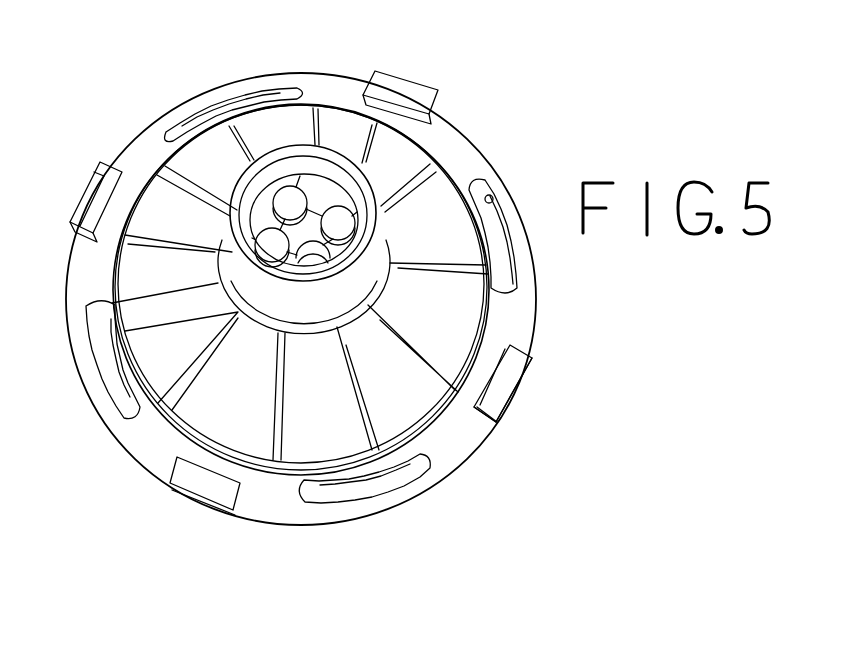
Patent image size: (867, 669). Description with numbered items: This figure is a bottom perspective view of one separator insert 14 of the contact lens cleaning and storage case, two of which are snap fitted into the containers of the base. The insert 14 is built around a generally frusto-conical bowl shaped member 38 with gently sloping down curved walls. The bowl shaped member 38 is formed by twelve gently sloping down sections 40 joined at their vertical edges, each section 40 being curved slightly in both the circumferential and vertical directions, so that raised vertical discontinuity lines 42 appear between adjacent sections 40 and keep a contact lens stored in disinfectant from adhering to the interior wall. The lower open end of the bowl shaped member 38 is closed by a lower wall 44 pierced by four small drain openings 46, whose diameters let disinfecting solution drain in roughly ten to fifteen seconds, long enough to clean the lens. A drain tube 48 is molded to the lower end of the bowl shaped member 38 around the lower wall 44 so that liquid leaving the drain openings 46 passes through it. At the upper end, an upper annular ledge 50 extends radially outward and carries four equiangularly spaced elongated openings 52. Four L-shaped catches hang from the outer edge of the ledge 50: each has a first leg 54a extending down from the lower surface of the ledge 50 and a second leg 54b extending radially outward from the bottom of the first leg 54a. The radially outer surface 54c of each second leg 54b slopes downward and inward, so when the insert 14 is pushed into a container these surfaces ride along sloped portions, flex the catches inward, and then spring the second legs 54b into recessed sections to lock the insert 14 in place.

The separator insert 14 is at (494, 93).
The bowl shaped member 38 is at (300, 417).
The sloping down sections 40 is at (200, 413).
The raised vertical discontinuity lines 42 is at (267, 432).
The lower wall 44 is at (280, 221).
The drain openings 46 is at (290, 197).
The drain tube 48 is at (235, 261).
The upper annular ledge 50 is at (518, 315).
The elongated openings 52 is at (500, 198).
The first leg 54a is at (477, 410).
The second leg 54b is at (482, 422).
The radially outer surface 54c is at (527, 369).